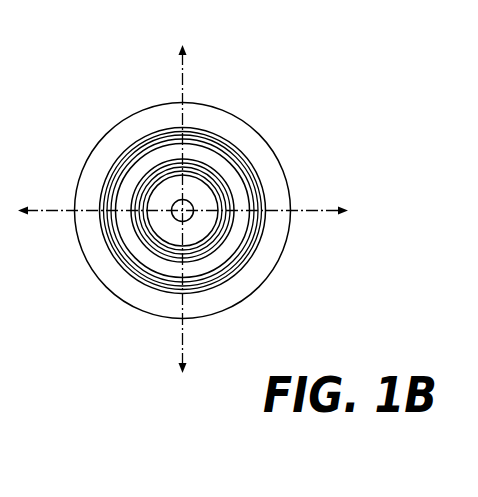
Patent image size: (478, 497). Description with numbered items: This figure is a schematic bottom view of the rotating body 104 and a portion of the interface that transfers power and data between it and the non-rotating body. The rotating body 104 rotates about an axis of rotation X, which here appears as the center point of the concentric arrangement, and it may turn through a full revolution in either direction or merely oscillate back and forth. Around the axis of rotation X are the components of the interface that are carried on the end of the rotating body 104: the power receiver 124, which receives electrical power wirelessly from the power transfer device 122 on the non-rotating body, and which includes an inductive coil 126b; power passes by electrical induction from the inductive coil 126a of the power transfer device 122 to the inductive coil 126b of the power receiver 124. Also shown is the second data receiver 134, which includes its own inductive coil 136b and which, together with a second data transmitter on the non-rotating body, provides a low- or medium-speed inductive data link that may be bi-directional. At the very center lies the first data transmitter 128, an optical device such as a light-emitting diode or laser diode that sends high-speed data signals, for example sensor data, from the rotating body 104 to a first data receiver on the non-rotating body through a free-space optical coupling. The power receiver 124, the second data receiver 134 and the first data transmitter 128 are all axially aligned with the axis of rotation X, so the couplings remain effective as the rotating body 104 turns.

The rotating body 104 is at (223, 110).
The power receiver 124 is at (243, 150).
The inductive coil 126b is at (253, 183).
The second data receiver 134 is at (217, 255).
The inductive coil 136b is at (236, 238).
The first data transmitter 128 is at (181, 200).
The axis of rotation X is at (176, 219).
The power transfer device 122 is at (207, 496).
The inductive coil 126a is at (280, 489).